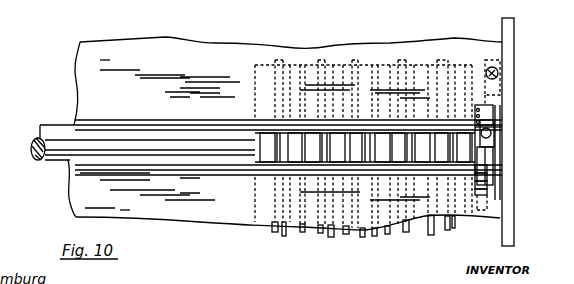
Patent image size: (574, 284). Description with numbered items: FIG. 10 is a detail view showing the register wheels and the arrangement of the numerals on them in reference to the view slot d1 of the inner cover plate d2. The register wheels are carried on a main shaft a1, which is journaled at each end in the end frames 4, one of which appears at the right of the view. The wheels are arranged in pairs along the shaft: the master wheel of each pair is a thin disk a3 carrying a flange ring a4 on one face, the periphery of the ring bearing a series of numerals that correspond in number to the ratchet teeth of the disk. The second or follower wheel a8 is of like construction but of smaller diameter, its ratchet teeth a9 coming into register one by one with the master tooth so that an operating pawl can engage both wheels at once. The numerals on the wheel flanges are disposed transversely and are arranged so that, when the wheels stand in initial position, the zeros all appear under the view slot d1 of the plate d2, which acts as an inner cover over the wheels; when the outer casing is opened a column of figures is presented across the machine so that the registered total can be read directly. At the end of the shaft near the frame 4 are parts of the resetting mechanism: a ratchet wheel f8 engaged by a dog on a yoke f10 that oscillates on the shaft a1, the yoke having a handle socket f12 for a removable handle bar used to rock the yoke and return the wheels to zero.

The main shaft a1 is at (52, 133).
The master wheel disk a3 is at (284, 237).
The flange ring a4 is at (423, 232).
The follower wheel a8 is at (402, 235).
The follower wheel ratchet teeth a9 is at (277, 147).
The view slot d1 is at (142, 135).
The inner cover plate d2 is at (229, 222).
The resetting ratchet wheel f8 is at (488, 192).
The resetting yoke f10 is at (488, 155).
The handle socket f12 is at (493, 127).
The frame 4 is at (513, 32).